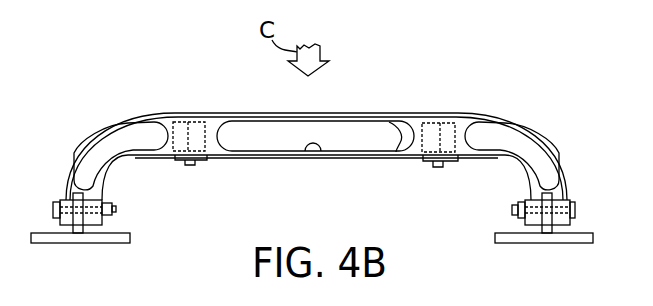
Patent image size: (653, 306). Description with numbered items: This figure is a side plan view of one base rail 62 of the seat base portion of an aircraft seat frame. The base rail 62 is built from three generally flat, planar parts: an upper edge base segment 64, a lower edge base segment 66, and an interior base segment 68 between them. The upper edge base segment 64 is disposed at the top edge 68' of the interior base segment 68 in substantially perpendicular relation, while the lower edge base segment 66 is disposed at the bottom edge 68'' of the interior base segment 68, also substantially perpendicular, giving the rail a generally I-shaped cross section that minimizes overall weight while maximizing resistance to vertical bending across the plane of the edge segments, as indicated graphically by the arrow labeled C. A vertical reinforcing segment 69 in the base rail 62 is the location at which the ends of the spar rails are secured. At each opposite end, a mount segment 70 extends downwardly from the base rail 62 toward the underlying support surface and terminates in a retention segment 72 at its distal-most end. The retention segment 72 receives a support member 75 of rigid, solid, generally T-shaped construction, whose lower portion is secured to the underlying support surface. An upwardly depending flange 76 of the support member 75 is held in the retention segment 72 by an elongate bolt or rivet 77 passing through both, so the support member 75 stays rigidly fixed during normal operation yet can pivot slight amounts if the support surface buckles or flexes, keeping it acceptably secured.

The base rail 62 is at (356, 114).
The upper edge base segment 64 is at (264, 112).
The lower edge base segment 66 is at (248, 158).
The interior base segment 68 is at (315, 161).
The top edge of interior base segment 68' is at (415, 162).
The bottom edge of interior base segment 68'' is at (310, 175).
The vertical reinforcing segment 69 is at (160, 124).
The mount segment 70 is at (100, 165).
The retention segment 72 is at (62, 198).
The support member 75 is at (77, 245).
The upwardly depending flange 76 is at (100, 199).
The elongate bolt or rivet 77 is at (117, 210).